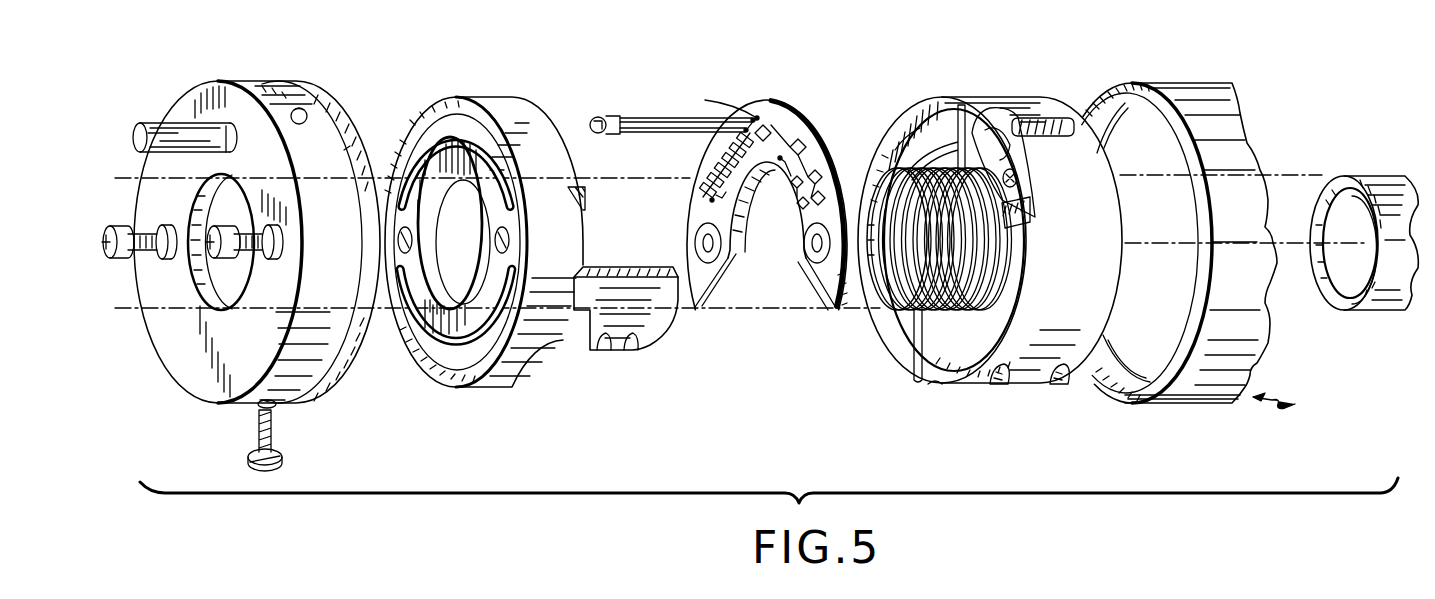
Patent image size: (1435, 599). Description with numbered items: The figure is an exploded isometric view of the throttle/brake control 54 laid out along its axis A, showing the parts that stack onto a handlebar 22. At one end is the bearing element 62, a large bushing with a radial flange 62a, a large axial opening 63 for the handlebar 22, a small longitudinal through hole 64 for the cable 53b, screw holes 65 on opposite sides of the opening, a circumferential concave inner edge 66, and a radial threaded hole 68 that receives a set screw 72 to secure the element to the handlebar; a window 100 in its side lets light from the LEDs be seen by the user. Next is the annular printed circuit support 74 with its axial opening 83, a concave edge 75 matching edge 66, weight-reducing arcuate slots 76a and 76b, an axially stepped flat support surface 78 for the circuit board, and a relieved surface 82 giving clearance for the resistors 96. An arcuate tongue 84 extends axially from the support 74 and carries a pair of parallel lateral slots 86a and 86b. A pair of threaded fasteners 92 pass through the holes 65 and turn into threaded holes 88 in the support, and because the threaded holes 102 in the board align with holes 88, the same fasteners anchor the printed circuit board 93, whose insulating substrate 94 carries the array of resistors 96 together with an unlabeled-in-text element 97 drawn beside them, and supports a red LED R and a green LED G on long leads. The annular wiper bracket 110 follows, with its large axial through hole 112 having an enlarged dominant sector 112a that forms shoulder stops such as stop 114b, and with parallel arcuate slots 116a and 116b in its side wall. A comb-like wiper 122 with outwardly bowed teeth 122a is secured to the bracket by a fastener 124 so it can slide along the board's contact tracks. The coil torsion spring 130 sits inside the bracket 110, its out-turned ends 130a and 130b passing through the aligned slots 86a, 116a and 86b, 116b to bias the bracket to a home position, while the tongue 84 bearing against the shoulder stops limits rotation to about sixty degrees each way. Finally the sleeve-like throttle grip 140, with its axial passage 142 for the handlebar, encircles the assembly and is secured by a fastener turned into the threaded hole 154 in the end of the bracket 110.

The handlebar 22 is at (1372, 177).
The cable 53b is at (154, 132).
The throttle/brake control 54 is at (1292, 411).
The bearing element 62 is at (340, 348).
The radial flange 62a is at (256, 84).
The axial opening 63 is at (240, 192).
The longitudinal through hole 64 is at (230, 142).
The screw holes 65 is at (271, 262).
The circumferential concave inner edge 66 is at (353, 156).
The radial threaded hole 68 is at (280, 405).
The set screw 72 is at (286, 459).
The printed circuit support 74 is at (526, 380).
The concave edge 75 is at (436, 372).
The arcuate slot 76a is at (432, 118).
The arcuate slot 76b is at (462, 378).
The flat support surface 78 is at (578, 240).
The relieved surface 82 is at (530, 118).
The axial opening 83 is at (466, 188).
The arcuate tongue 84 is at (672, 312).
The lateral slot 86a is at (604, 350).
The lateral slot 86b is at (636, 346).
The threaded holes 88 is at (494, 240).
The threaded fasteners 92 is at (224, 228).
The printed circuit board 93 is at (754, 87).
The insulating substrate 94 is at (769, 110).
The resistors 96 is at (716, 146).
The conductor 97 is at (735, 110).
The window 100 is at (305, 110).
The threaded holes 102 is at (812, 246).
The wiper bracket 110 is at (1050, 96).
The axial through hole 112 is at (926, 150).
The dominant sector 112a is at (934, 386).
The shoulder stop 114b is at (1030, 236).
The arcuate slot 116a is at (1000, 388).
The arcuate slot 116b is at (1059, 386).
The wiper 122 is at (1022, 160).
The teeth 122a is at (1008, 118).
The fastener 124 is at (1018, 182).
The coil torsion spring 130 is at (884, 300).
The spring end 130a is at (906, 350).
The spring end 130b is at (962, 102).
The throttle grip 140 is at (1178, 80).
The axial passage 142 is at (1130, 362).
The threaded hole 154 is at (1076, 98).
The red LED R is at (601, 115).
The green LED G is at (600, 134).
The axis A is at (1340, 228).